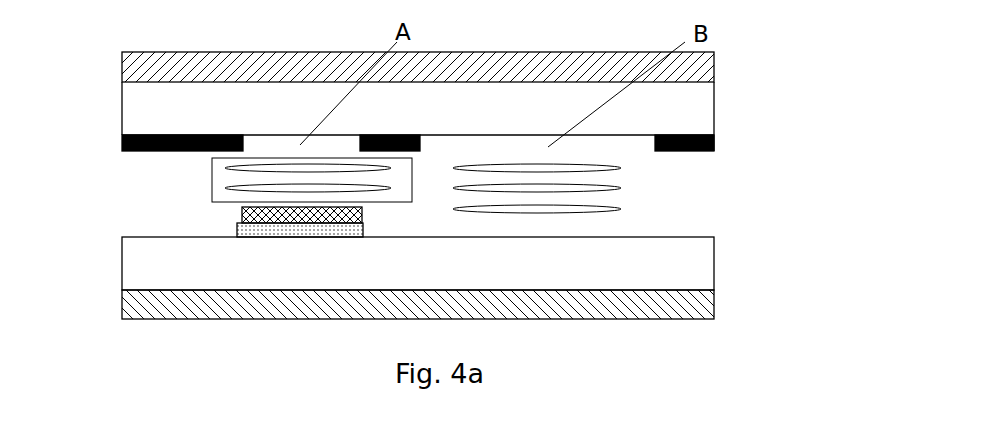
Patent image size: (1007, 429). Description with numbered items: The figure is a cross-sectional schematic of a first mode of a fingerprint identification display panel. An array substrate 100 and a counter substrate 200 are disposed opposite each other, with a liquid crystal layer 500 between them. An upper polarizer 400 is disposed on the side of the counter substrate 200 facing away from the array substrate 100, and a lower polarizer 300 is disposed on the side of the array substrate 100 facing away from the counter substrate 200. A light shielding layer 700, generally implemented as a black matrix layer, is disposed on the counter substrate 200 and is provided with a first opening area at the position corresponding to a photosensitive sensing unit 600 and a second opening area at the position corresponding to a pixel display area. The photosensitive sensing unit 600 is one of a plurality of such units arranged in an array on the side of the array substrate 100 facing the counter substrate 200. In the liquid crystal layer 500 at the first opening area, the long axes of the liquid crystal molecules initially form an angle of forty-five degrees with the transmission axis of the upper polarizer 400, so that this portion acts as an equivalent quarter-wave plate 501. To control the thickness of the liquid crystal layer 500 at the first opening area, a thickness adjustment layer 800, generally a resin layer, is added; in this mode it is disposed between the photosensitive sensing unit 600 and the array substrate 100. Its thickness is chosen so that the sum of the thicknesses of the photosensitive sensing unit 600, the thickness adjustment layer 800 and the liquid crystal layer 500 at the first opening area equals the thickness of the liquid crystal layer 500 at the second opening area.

The array substrate 100 is at (708, 262).
The counter substrate 200 is at (708, 107).
The lower polarizer 300 is at (714, 308).
The upper polarizer 400 is at (714, 63).
The liquid crystal layer 500 is at (595, 178).
The equivalent quarter-wave plate 501 is at (212, 182).
The photosensitive sensing unit 600 is at (242, 211).
The light shielding layer 700 is at (393, 132).
The thickness adjustment layer 800 is at (238, 224).